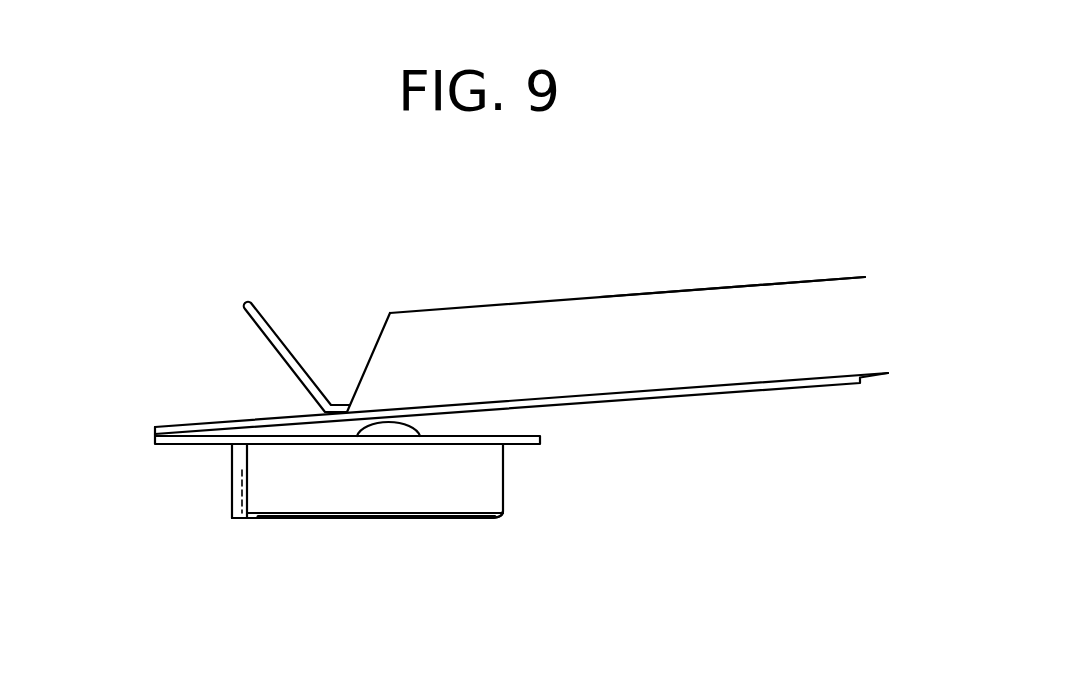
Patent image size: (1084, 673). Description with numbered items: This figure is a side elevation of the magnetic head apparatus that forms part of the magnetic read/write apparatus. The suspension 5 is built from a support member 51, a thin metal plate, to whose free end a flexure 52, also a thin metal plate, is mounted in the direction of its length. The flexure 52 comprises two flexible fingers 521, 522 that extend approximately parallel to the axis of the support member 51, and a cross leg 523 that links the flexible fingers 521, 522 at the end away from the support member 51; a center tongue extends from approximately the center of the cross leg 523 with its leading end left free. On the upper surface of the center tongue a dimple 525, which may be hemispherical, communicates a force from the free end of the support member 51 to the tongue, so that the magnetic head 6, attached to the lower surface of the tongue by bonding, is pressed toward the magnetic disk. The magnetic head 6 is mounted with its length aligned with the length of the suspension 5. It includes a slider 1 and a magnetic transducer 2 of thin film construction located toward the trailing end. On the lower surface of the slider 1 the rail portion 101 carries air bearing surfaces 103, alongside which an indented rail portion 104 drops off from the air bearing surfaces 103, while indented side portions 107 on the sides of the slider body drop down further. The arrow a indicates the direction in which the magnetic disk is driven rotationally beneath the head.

The slider 1 is at (486, 488).
The magnetic transducer 2 is at (241, 486).
The suspension 5 is at (493, 305).
The support member 51 is at (698, 320).
The flexure 52 is at (297, 417).
The flexible finger 521 is at (252, 420).
The flexible finger 522 is at (521, 403).
The cross leg 523 is at (193, 423).
The dimple 525 is at (407, 428).
The rail portion 101 is at (477, 522).
The air bearing surface 103 is at (460, 524).
The indented rail portion 104 is at (268, 521).
The indented side portion 107 is at (403, 522).
The magnetic head 6 is at (215, 507).
The direction of rotation of the magnetic disk a is at (295, 549).